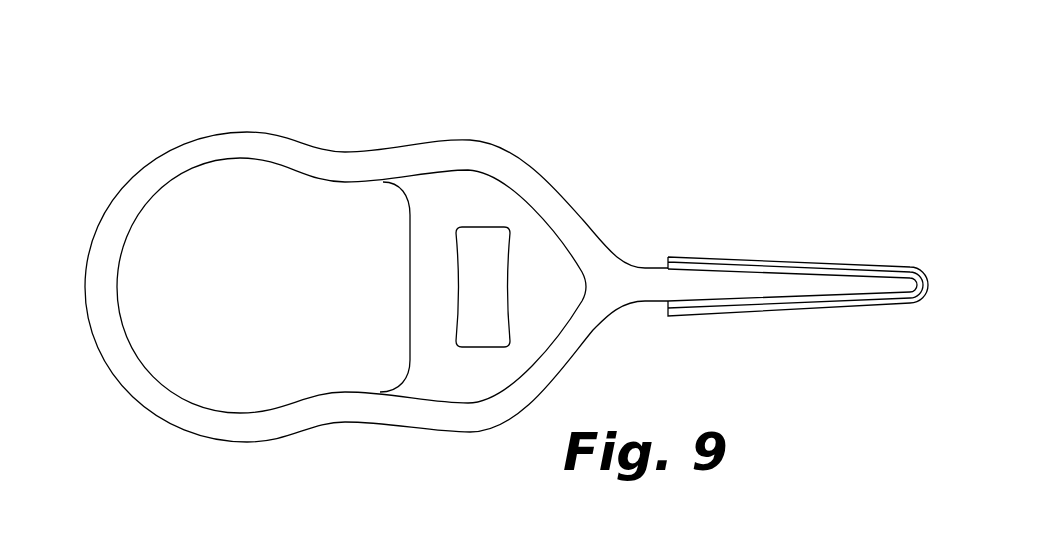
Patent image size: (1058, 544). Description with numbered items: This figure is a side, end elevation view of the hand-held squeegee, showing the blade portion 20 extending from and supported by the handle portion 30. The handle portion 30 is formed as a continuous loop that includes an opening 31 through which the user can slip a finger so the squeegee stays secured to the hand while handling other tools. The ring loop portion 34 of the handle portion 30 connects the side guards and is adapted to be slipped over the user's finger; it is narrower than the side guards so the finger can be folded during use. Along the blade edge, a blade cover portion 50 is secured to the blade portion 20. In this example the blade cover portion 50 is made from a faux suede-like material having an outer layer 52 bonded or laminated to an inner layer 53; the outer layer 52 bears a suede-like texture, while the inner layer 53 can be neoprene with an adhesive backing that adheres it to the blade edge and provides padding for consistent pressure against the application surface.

The blade portion 20 is at (779, 246).
The handle portion 30 is at (354, 270).
The opening 31 is at (313, 285).
The ring loop portion 34 is at (147, 413).
The blade cover portion 50 is at (814, 278).
The outer layer 52 is at (817, 265).
The inner layer 53 is at (762, 300).